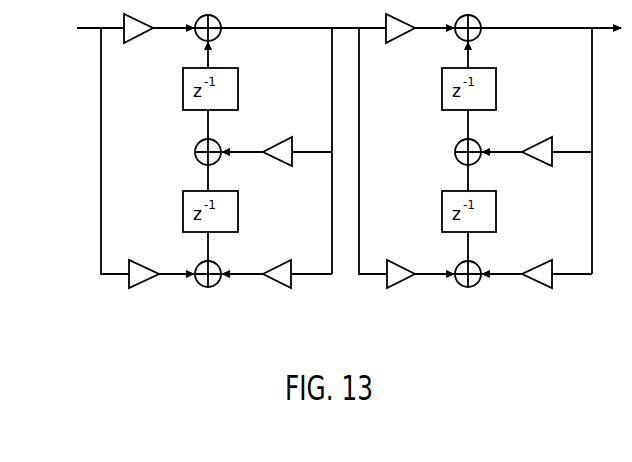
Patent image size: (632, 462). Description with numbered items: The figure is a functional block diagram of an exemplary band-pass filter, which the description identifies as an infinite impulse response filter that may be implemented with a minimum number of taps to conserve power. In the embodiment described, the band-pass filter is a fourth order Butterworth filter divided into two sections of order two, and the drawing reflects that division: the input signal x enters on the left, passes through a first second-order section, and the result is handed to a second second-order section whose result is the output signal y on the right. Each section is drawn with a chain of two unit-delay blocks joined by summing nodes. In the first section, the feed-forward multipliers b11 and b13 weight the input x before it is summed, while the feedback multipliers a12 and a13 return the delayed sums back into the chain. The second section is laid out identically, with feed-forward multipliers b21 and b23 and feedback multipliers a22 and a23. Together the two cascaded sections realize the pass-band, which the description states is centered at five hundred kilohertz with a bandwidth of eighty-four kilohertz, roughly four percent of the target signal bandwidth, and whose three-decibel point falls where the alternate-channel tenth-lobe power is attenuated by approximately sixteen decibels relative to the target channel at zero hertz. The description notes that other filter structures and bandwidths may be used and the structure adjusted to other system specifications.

The input signal x is at (90, 31).
The output signal y is at (556, 39).
The feedforward coefficient multiplier b11 is at (140, 40).
The feedforward coefficient multiplier b13 is at (160, 265).
The feedback coefficient multiplier a12 is at (277, 141).
The feedback coefficient multiplier a13 is at (277, 265).
The feedforward coefficient multiplier b21 is at (400, 40).
The feedforward coefficient multiplier b23 is at (419, 265).
The feedback coefficient multiplier a22 is at (537, 141).
The feedback coefficient multiplier a23 is at (537, 265).